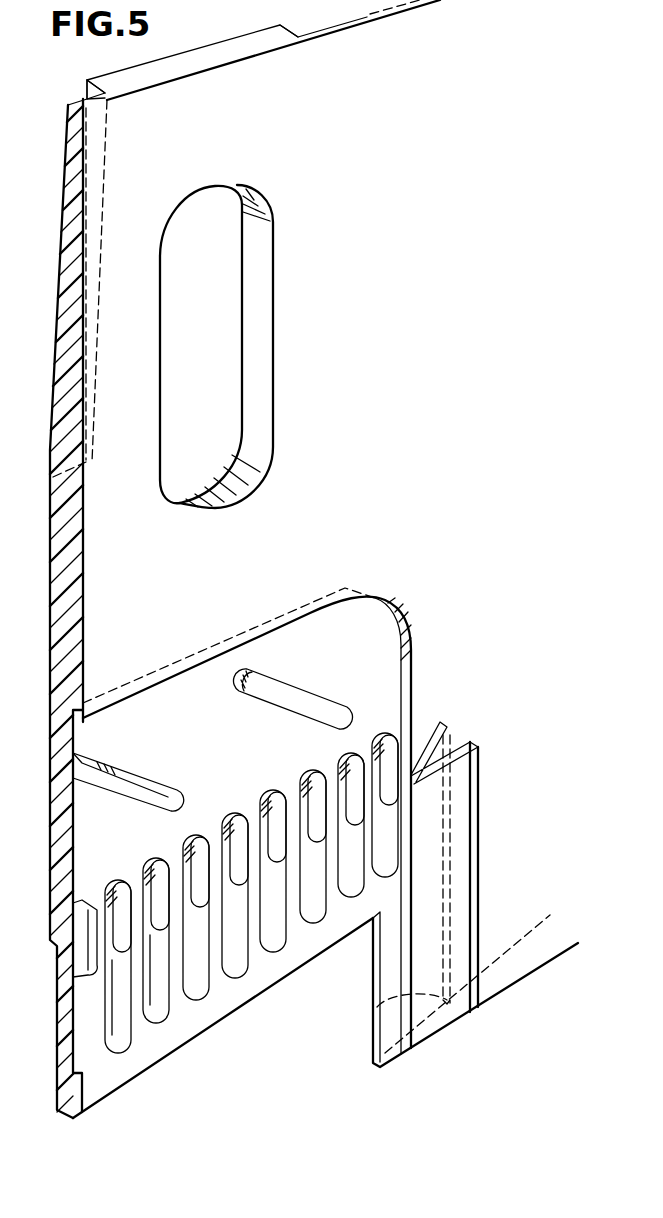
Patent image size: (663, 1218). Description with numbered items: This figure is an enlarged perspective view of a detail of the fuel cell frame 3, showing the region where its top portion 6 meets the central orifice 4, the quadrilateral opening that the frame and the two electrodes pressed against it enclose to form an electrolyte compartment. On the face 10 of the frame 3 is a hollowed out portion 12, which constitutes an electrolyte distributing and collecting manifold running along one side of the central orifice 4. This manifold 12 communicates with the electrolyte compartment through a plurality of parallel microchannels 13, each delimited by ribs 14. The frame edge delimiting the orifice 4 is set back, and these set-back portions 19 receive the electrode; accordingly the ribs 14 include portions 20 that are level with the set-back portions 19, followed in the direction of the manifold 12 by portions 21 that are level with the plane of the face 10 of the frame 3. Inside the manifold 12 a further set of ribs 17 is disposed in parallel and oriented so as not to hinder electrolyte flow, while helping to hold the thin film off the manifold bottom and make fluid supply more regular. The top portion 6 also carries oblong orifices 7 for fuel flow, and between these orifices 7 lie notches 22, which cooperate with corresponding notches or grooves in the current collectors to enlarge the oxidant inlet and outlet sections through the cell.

The frame 3 is at (43, 540).
The central orifice 4 is at (357, 953).
The top portion 6 is at (152, 505).
The orifices for fuel flow 7 is at (203, 323).
The face 10 is at (514, 862).
The hollowed out portions 12 is at (100, 820).
The microchannels 13 is at (253, 942).
The ribs 14 is at (205, 855).
The ribs 17 is at (300, 700).
The set-back portions 19 is at (378, 1007).
The portions 20 is at (118, 1036).
The portions 21 is at (213, 880).
The notches 22 is at (87, 82).